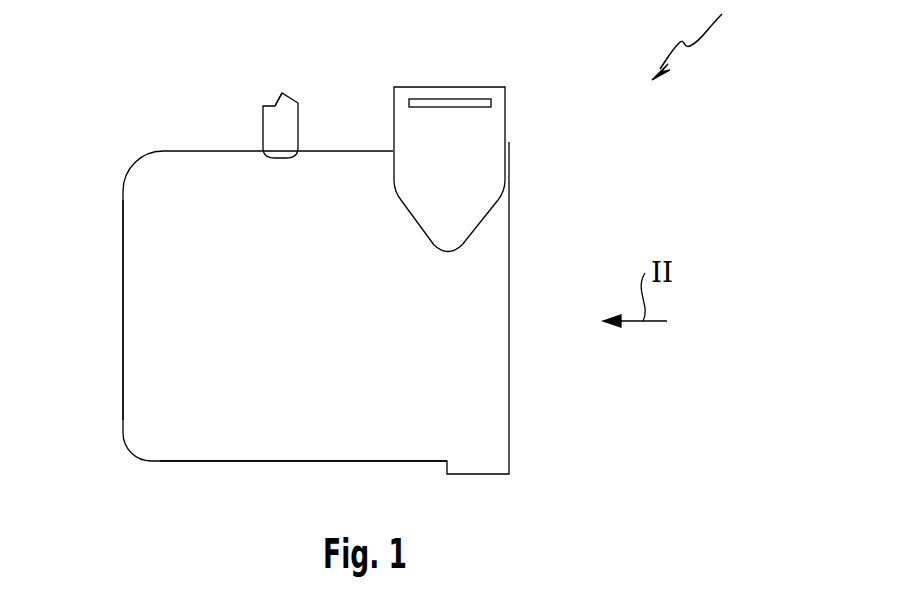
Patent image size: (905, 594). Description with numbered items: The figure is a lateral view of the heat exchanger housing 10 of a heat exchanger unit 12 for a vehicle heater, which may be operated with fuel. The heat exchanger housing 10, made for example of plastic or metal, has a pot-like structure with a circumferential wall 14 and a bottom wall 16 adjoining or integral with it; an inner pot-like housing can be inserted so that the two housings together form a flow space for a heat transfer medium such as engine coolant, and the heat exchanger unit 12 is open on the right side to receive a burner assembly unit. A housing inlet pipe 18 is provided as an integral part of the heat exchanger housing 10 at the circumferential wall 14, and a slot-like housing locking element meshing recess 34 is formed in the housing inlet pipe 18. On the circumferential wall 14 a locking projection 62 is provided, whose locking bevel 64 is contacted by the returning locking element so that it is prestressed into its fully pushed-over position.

The heat exchanger housing 10 is at (163, 150).
The heat exchanger unit 12 is at (701, 40).
The circumferential wall 14 is at (262, 462).
The bottom wall 16 is at (122, 290).
The housing inlet pipe 18 is at (505, 118).
The housing locking element meshing recess 34 is at (445, 105).
The locking projection 62 is at (298, 125).
The locking bevel 64 is at (272, 101).